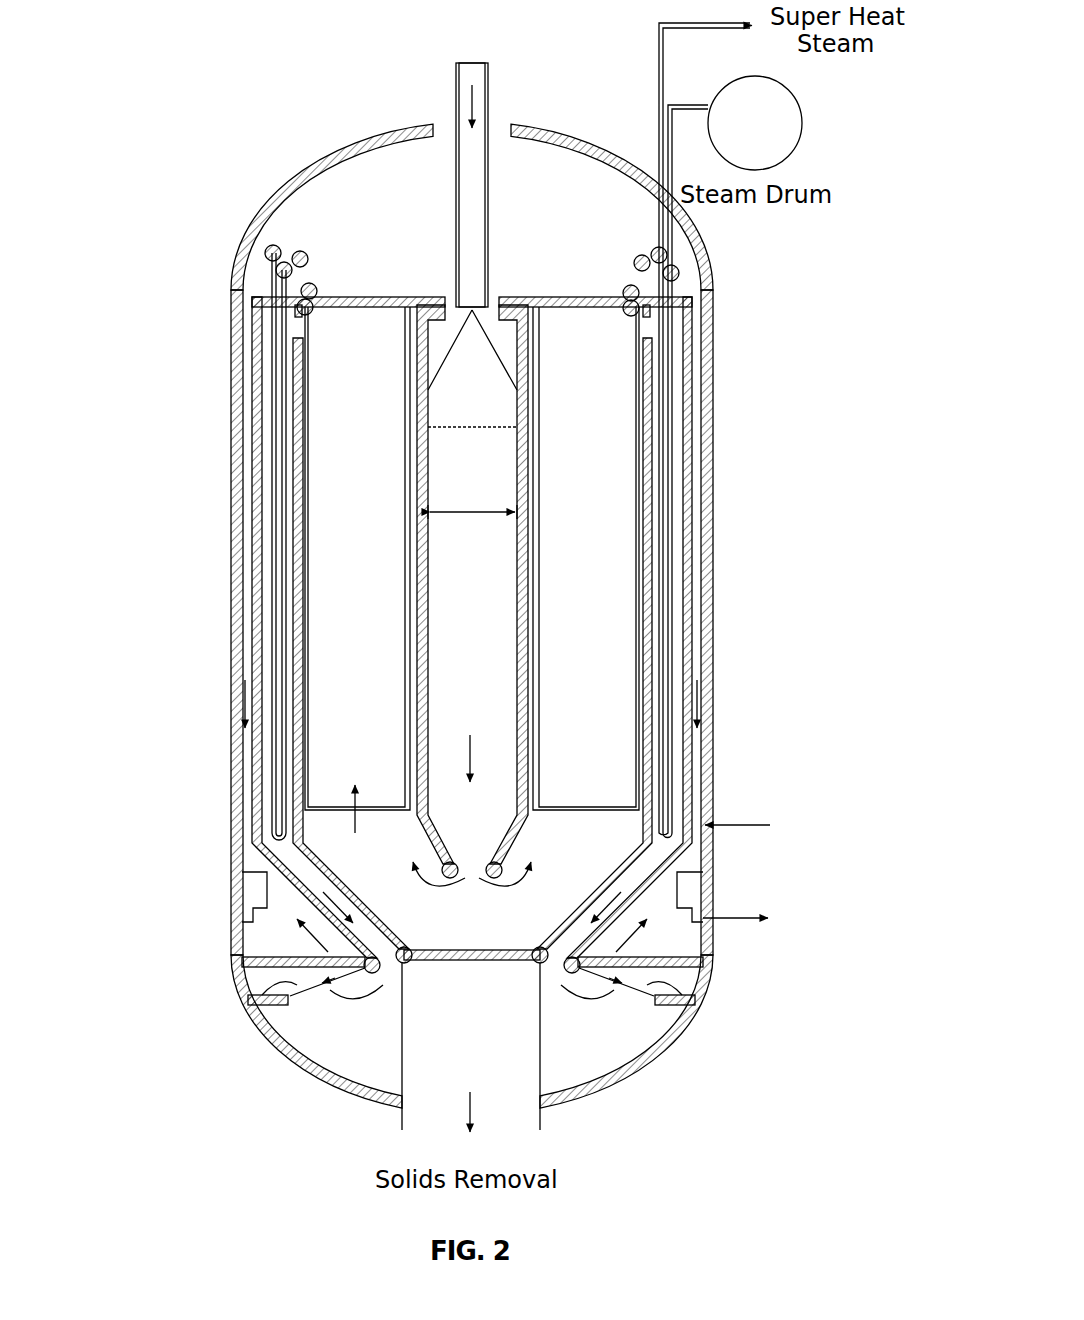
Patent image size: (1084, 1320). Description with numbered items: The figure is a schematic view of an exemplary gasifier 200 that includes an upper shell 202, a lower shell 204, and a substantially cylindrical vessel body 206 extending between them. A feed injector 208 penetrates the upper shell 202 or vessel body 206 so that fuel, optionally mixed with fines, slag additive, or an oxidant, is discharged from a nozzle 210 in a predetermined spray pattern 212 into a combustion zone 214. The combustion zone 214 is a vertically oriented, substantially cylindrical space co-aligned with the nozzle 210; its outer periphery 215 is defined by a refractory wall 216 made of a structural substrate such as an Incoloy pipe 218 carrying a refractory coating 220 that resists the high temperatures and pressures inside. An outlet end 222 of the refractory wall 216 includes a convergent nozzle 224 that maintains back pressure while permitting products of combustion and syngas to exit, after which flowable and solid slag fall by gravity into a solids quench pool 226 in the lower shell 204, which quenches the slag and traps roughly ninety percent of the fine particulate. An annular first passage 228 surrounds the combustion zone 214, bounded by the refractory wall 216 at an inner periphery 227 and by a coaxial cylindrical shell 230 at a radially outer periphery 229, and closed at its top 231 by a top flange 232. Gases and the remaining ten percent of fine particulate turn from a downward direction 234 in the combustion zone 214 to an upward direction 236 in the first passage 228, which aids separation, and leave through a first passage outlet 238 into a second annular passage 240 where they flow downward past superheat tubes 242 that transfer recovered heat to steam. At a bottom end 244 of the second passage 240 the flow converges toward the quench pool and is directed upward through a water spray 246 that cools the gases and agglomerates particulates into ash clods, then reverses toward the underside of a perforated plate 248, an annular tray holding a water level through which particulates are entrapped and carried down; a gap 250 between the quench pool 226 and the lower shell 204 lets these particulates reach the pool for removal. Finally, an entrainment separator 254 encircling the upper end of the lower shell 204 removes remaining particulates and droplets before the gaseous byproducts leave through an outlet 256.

The gasifier 200 is at (182, 77).
The upper shell 202 is at (297, 180).
The lower shell 204 is at (298, 1078).
The vessel body 206 is at (714, 570).
The feed injector 208 is at (490, 82).
The nozzle 210 is at (450, 300).
The spray pattern 212 is at (500, 402).
The combustion zone 214 is at (492, 474).
The outer periphery 215 is at (472, 516).
The refractory wall 216 is at (517, 625).
The Incoloy pipe 218 is at (535, 665).
The refractory coating 220 is at (545, 593).
The outlet end 222 is at (540, 832).
The convergent nozzle 224 is at (536, 868).
The solids quench pool 226 is at (498, 1050).
The inner periphery 227 is at (405, 585).
The first passage 228 is at (375, 532).
The radially outer periphery 229 is at (305, 435).
The cylindrical shell 230 is at (648, 460).
The top 231 is at (590, 318).
The top flange 232 is at (553, 300).
The downward direction 234 is at (470, 772).
The upward direction 236 is at (258, 840).
The first passage outlet 238 is at (660, 310).
The second annular passage 240 is at (267, 473).
The superheat tubes 242 is at (682, 412).
The bottom end 244 is at (297, 832).
The water spray 246 is at (268, 1003).
The perforated plate 248 is at (288, 990).
The gap 250 is at (400, 1085).
The entrainment separator 254 is at (242, 888).
The outlet 256 is at (675, 635).